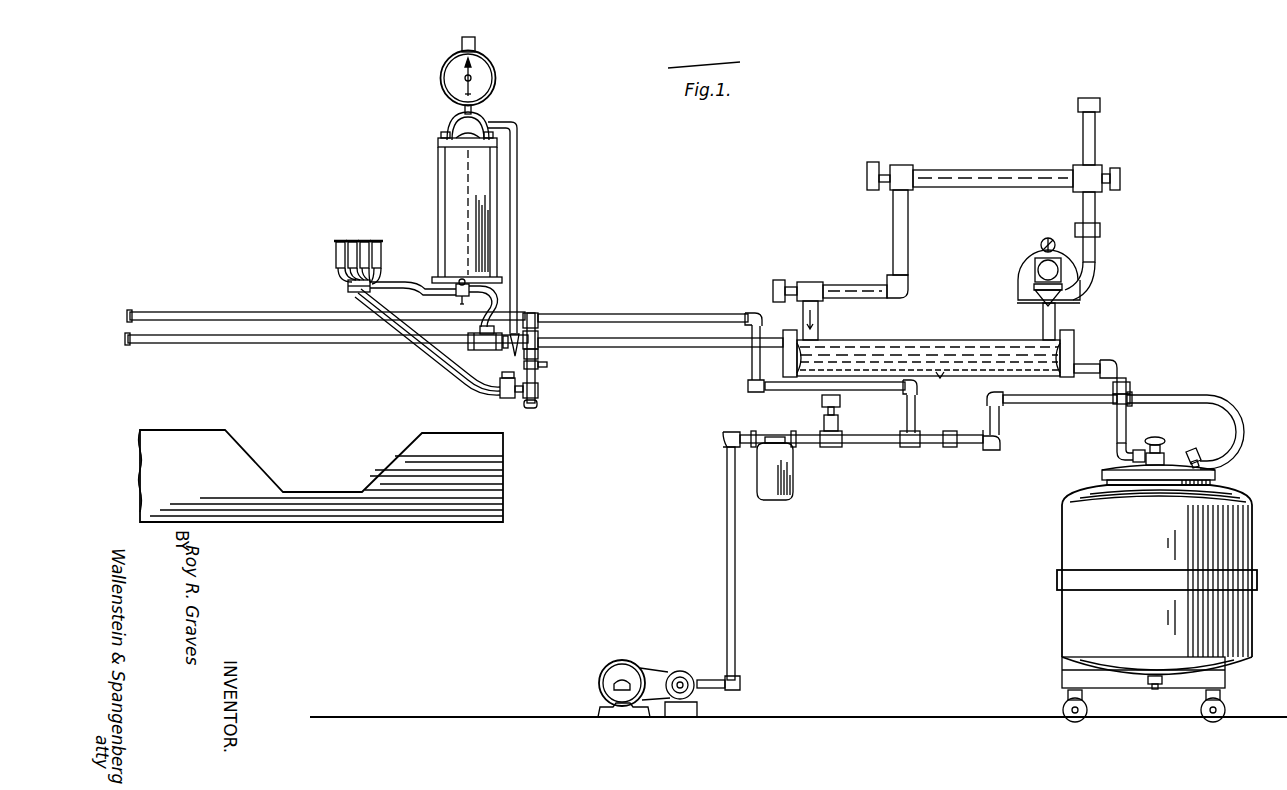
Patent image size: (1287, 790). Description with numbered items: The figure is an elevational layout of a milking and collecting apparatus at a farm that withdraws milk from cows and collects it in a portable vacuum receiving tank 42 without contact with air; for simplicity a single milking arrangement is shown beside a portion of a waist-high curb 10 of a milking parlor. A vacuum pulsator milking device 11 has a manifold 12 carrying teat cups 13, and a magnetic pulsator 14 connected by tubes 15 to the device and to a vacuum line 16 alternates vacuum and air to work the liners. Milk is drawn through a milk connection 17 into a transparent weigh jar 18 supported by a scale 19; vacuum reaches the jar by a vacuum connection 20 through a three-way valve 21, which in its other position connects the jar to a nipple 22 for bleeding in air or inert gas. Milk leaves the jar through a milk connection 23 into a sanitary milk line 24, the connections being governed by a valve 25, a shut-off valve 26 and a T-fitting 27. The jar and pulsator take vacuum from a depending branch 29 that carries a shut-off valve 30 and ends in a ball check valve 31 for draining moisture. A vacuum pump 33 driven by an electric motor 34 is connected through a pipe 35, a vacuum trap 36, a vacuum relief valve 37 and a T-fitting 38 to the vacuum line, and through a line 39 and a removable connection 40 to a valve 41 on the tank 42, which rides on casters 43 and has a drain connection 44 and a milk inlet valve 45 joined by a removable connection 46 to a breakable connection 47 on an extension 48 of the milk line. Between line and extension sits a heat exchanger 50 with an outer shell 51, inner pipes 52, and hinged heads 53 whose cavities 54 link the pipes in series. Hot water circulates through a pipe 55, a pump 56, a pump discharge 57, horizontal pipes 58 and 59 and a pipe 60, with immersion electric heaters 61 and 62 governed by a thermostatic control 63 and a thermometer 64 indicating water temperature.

The curb 10 is at (495, 522).
The vacuum pulsator milking device 11 is at (328, 251).
The manifold 12 is at (348, 285).
The teat cups 13 is at (377, 241).
The magnetic pulsator 14 is at (506, 398).
The tubes 15 is at (458, 386).
The vacuum line 16 is at (234, 315).
The milk connection 17 is at (411, 283).
The weigh jar 18 is at (436, 166).
The scale 19 is at (488, 69).
The vacuum connection 20 is at (520, 219).
The three-way valve 21 is at (513, 352).
The nipple 22 is at (504, 350).
The milk connection 23 is at (500, 292).
The sanitary milk line 24 is at (240, 343).
The valve 25 is at (456, 293).
The shut-off valve 26 is at (480, 330).
The T-fitting 27 is at (478, 344).
The branch 29 is at (540, 354).
The shut-off valve 30 is at (547, 366).
The ball check valve 31 is at (540, 405).
The vacuum pump 33 is at (680, 671).
The electric motor 34 is at (622, 668).
The pipe 35 is at (727, 550).
The vacuum trap 36 is at (794, 489).
The vacuum relief valve 37 is at (822, 409).
The T-fitting 38 is at (910, 448).
The line 39 is at (1000, 416).
The removable connection 40 is at (1160, 395).
The valve 41 is at (1196, 452).
The portable vacuum receiving tank 42 is at (1062, 541).
The casters 43 is at (1062, 709).
The drain connection 44 is at (1155, 690).
The milk inlet valve 45 is at (1160, 440).
The removable connection 46 is at (1117, 428).
The breakable connection 47 is at (1117, 362).
The extension 48 is at (1092, 363).
The heat exchanger 50 is at (945, 352).
The outer shell 51 is at (978, 340).
The inner pipes 52 is at (946, 380).
The hinged head 53 is at (783, 330).
The cavities 54 is at (1105, 327).
The pipe 55 is at (1043, 321).
The pump 56 is at (1037, 253).
The pump discharge 57 is at (1096, 206).
The horizontal pipe 58 is at (975, 170).
The horizontal pipe 59 is at (848, 285).
The pipe 60 is at (818, 321).
The immersion type electric heater 61 is at (866, 179).
The immersion type electric heater 62 is at (772, 288).
The thermostatic control 63 is at (1121, 178).
The thermometer 64 is at (1050, 238).